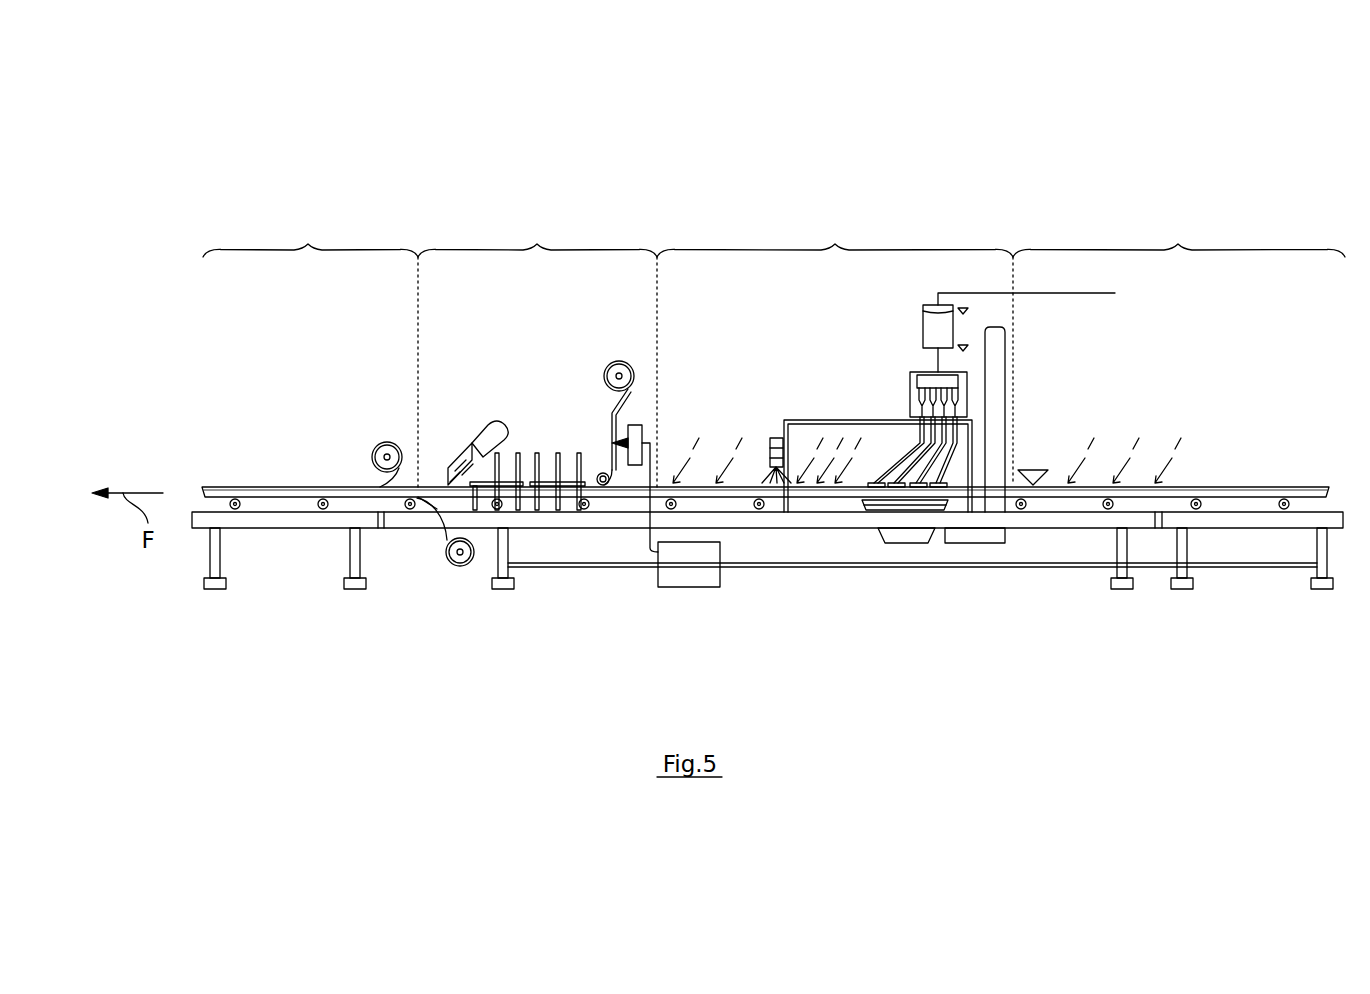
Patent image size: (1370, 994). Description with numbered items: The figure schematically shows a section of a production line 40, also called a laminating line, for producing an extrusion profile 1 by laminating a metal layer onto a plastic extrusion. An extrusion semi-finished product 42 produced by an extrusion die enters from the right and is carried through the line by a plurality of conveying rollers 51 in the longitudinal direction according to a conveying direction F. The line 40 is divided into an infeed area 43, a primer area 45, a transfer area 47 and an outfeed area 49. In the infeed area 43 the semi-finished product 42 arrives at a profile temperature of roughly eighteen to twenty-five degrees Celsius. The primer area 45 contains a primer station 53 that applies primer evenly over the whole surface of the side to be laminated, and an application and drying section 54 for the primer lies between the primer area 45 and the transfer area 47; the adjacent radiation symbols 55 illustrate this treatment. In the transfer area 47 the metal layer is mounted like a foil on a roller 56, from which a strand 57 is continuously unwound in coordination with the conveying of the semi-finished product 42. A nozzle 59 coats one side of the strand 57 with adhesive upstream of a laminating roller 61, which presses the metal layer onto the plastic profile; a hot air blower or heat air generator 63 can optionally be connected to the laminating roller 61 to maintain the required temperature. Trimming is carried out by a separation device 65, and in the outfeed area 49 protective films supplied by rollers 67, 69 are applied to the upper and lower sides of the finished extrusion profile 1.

The extrusion profile 1 is at (213, 490).
The production line 40 is at (1242, 194).
The extrusion semi-finished product 42 is at (1272, 487).
The infeed area 43 is at (1179, 237).
The primer area 45 is at (835, 351).
The transfer area 47 is at (537, 352).
The outfeed area 49 is at (310, 352).
The conveying rollers 51 is at (323, 509).
The primer station 53 is at (858, 357).
The application and drying section 54 is at (719, 448).
The radiation source 55 is at (672, 444).
The roller 56 is at (619, 360).
The strand 57 is at (612, 412).
The nozzle 59 is at (617, 450).
The laminating roller 61 is at (598, 470).
The heat air generator 63 is at (544, 532).
The separation device 65 is at (486, 420).
The roller 67 is at (460, 567).
The roller 69 is at (380, 443).